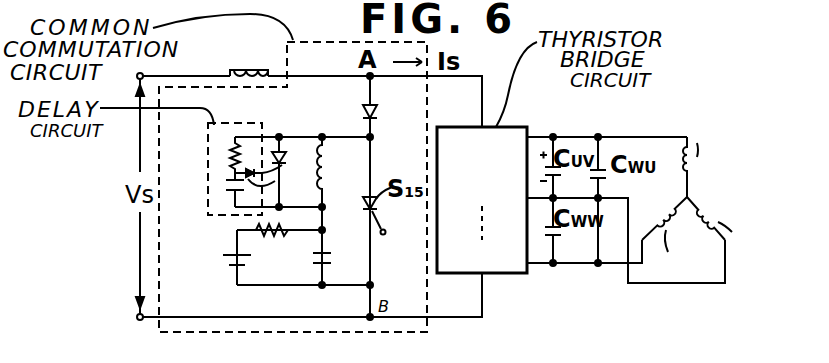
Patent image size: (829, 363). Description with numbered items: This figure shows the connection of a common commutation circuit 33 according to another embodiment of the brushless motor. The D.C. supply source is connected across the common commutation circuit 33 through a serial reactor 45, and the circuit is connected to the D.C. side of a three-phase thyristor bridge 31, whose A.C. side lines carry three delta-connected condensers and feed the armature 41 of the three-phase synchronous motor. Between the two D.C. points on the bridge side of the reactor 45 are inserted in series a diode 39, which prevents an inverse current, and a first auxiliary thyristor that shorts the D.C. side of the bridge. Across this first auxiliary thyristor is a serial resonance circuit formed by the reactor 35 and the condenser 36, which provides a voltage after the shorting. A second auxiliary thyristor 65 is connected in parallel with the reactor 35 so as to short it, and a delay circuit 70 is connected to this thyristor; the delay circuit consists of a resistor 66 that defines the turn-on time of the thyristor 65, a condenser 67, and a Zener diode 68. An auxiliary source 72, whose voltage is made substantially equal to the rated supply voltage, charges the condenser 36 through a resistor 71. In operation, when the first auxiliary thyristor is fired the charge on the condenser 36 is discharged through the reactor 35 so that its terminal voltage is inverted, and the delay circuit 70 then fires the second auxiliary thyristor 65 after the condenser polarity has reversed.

The common commutation circuit 33 is at (330, 40).
The reactor 45 is at (262, 68).
The delay circuit 70 is at (228, 122).
The resistor 66 is at (230, 160).
The condenser 67 is at (225, 193).
The second auxiliary thyristor 65 is at (281, 150).
The Zener diode 68 is at (257, 187).
The reactor 35 is at (325, 177).
The diode 39 is at (375, 114).
The condenser 36 is at (350, 242).
The resistor 71 is at (273, 233).
The auxiliary source 72 is at (220, 260).
The three-phase thyristor bridge 31 is at (520, 127).
The armature 41 is at (684, 134).